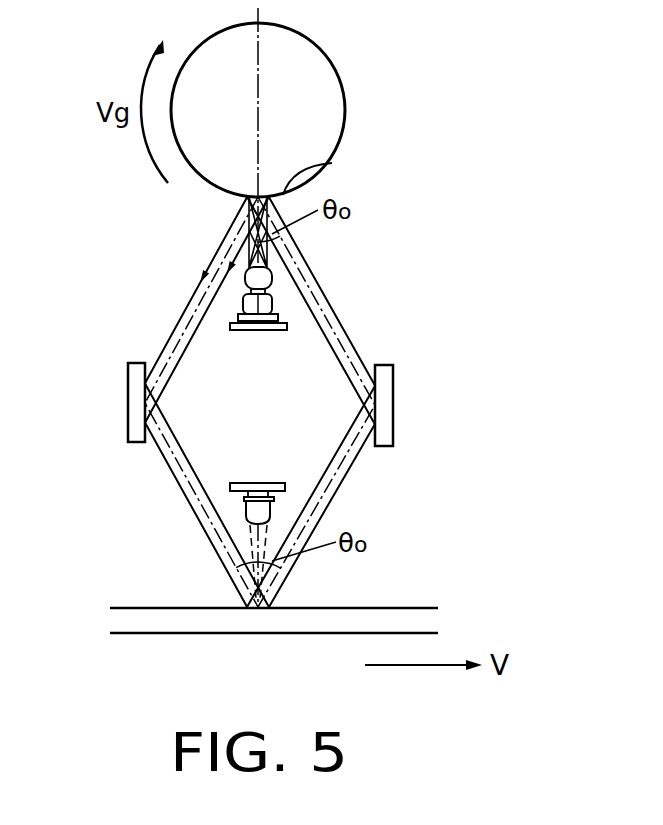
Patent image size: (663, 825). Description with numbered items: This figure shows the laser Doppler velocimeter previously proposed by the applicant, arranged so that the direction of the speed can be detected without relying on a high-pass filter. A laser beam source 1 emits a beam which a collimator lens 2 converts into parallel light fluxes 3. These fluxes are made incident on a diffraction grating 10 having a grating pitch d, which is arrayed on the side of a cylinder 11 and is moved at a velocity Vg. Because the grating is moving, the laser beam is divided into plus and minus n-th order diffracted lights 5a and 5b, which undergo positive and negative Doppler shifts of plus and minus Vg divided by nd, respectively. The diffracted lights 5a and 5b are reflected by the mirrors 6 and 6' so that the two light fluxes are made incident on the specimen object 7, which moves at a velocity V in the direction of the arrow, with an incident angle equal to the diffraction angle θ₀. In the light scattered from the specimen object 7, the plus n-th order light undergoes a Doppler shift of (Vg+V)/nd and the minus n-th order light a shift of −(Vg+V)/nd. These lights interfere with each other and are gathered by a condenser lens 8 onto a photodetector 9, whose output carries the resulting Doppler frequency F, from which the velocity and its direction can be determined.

The laser beam source 1 is at (273, 302).
The collimator lens 2 is at (273, 278).
The parallel light fluxes 3 is at (253, 252).
The diffracted light 5a is at (206, 297).
The diffracted light 5b is at (338, 327).
The mirror 6 is at (107, 402).
The mirror 6' is at (414, 405).
The moving object 7 is at (394, 622).
The condenser lens 8 is at (262, 532).
The photodetector 9 is at (250, 513).
The diffraction grating 10 is at (331, 165).
The cylinder 11 is at (318, 77).